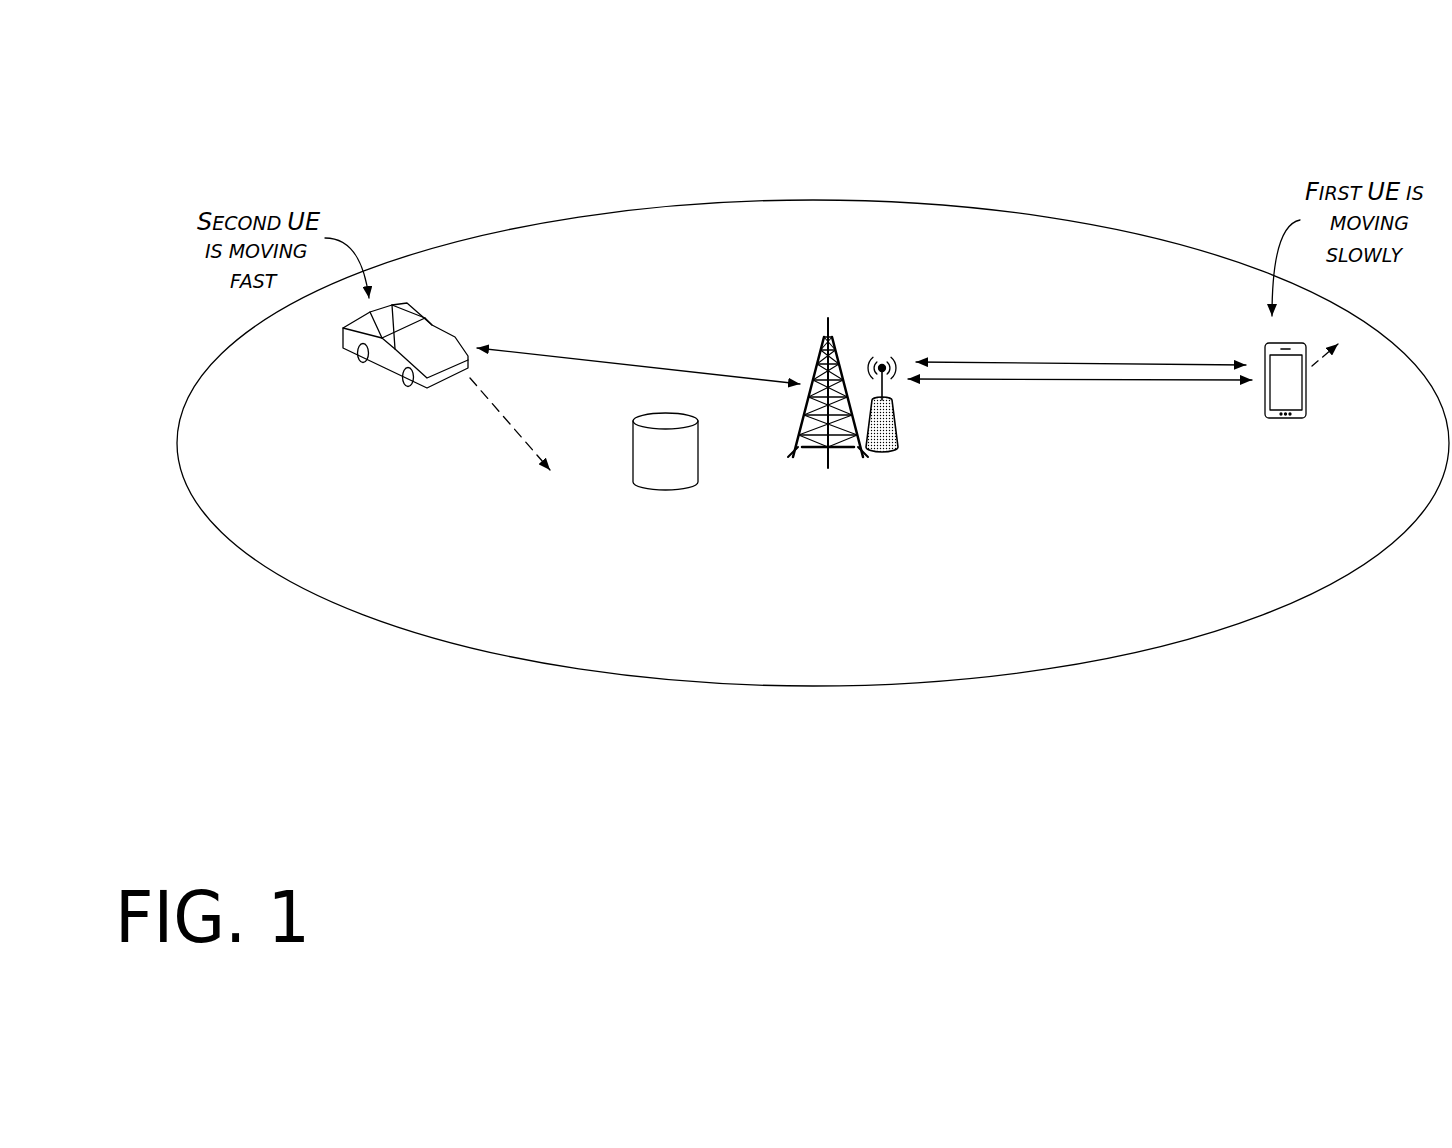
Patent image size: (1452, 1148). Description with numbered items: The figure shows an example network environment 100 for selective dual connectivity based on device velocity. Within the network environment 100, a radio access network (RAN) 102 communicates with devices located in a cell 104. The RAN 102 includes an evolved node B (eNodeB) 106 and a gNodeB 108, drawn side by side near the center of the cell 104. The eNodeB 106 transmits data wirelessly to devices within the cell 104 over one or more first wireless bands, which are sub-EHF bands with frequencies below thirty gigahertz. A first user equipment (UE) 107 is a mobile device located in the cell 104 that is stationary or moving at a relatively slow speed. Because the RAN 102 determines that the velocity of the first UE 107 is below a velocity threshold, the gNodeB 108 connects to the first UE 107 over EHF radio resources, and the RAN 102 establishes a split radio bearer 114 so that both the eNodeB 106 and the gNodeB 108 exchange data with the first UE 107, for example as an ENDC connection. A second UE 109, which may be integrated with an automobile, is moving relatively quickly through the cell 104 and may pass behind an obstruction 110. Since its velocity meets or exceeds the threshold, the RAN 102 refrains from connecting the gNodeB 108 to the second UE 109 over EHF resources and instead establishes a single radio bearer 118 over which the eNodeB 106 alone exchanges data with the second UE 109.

The network environment 100 is at (212, 80).
The radio access network (RAN) 102 is at (878, 420).
The cell 104 is at (758, 687).
The evolved node B (eNodeB) 106 is at (816, 358).
The first user equipment (UE) 107 is at (1265, 393).
The gNodeB 108 is at (898, 443).
The second UE 109 is at (353, 355).
The obstruction 110 is at (632, 468).
The split radio bearer 114 is at (1166, 384).
The single radio bearer 118 is at (636, 364).